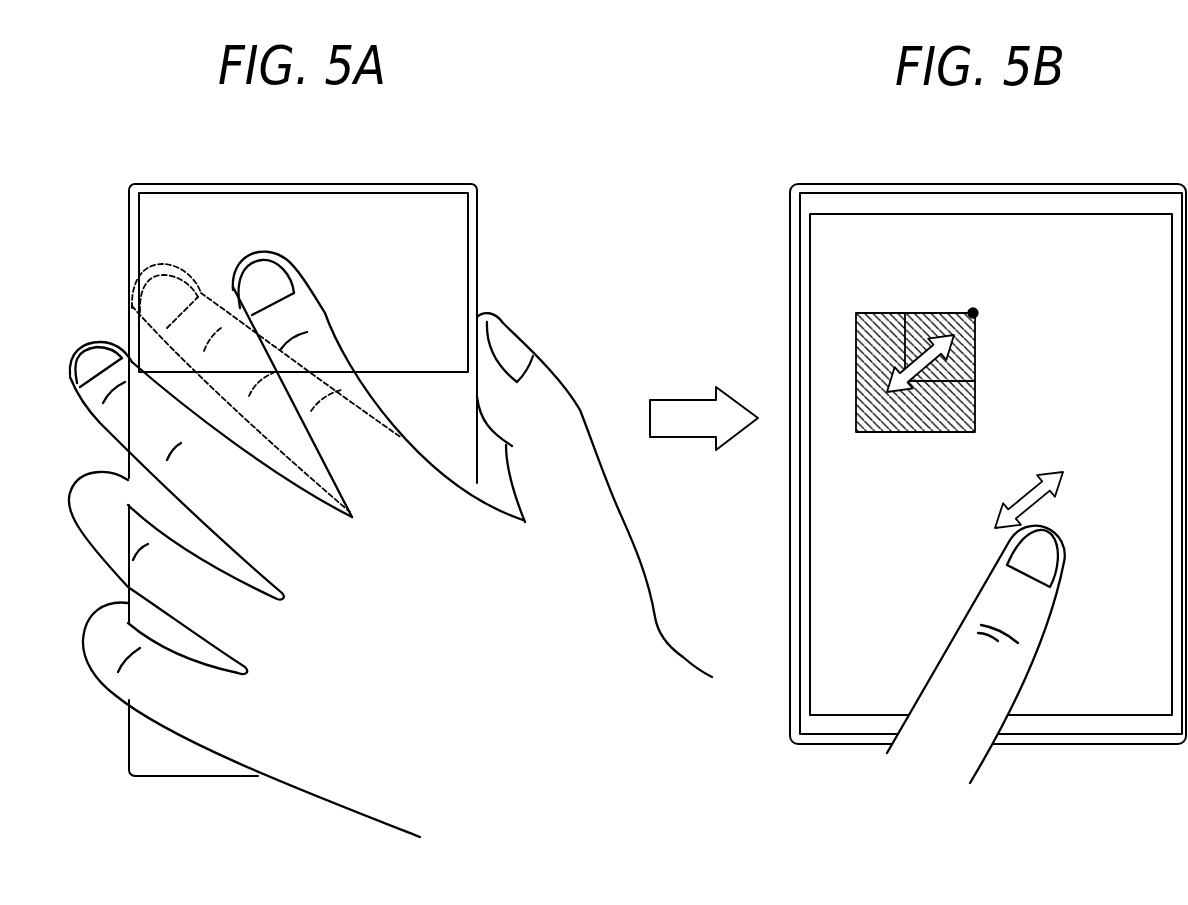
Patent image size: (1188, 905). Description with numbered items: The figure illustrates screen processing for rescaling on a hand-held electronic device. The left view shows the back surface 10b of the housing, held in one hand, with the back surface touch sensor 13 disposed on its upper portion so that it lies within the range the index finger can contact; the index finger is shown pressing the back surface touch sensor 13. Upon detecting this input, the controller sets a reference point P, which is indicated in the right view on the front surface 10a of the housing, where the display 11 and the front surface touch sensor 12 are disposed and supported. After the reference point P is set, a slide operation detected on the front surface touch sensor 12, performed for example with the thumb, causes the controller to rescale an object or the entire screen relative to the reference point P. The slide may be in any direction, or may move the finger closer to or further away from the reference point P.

In FIG. 5A, the back surface 10b is at (345, 184).
In FIG. 5A, the back surface touch sensor 13 is at (440, 240).
In FIG. 5B, the front surface 10a is at (1013, 184).
In FIG. 5B, the display 11 is at (1063, 214).
In FIG. 5B, the front surface touch sensor 12 is at (1123, 193).
In FIG. 5B, the reference point P is at (979, 311).